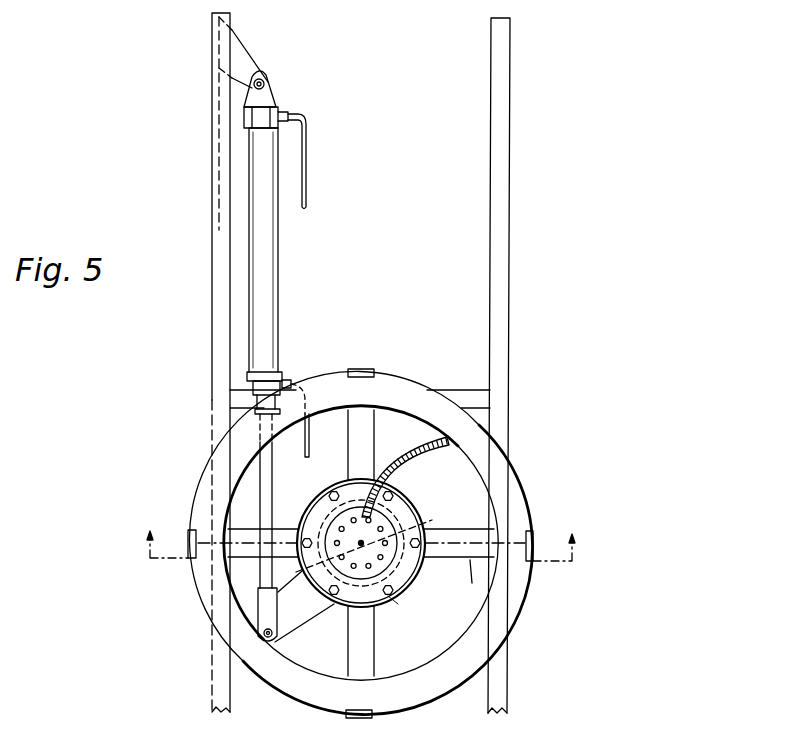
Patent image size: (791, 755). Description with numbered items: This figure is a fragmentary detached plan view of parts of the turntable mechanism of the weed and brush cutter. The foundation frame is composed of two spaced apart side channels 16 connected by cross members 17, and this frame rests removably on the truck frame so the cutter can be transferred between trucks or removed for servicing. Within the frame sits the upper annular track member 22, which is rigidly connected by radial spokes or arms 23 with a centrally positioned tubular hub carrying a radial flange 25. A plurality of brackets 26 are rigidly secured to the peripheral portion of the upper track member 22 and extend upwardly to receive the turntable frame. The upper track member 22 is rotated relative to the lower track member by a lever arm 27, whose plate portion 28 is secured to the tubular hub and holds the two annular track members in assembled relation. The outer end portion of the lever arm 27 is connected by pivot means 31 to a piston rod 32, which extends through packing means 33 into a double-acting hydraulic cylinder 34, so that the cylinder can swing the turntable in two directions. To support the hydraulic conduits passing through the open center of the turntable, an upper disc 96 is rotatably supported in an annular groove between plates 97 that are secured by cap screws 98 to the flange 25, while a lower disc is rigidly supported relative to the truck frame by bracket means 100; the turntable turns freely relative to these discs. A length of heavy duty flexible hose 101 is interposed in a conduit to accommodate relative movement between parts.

The side channel 16 is at (214, 187).
The cross member 17 is at (464, 392).
The upper annular track member 22 is at (513, 605).
The radial spoke 23 is at (241, 539).
The radial flange 25 is at (395, 604).
The bracket 26 is at (190, 535).
The lever arm 27 is at (312, 626).
The plate portion 28 is at (344, 479).
The pivot means 31 is at (266, 640).
The piston rod 32 is at (263, 573).
The packing means 33 is at (253, 398).
The hydraulic cylinder 34 is at (267, 280).
The upper disc 96 is at (404, 585).
The plate 97 is at (399, 590).
The cap screw 98 is at (410, 500).
The bracket means 100 is at (457, 580).
The flexible hose 101 is at (392, 452).